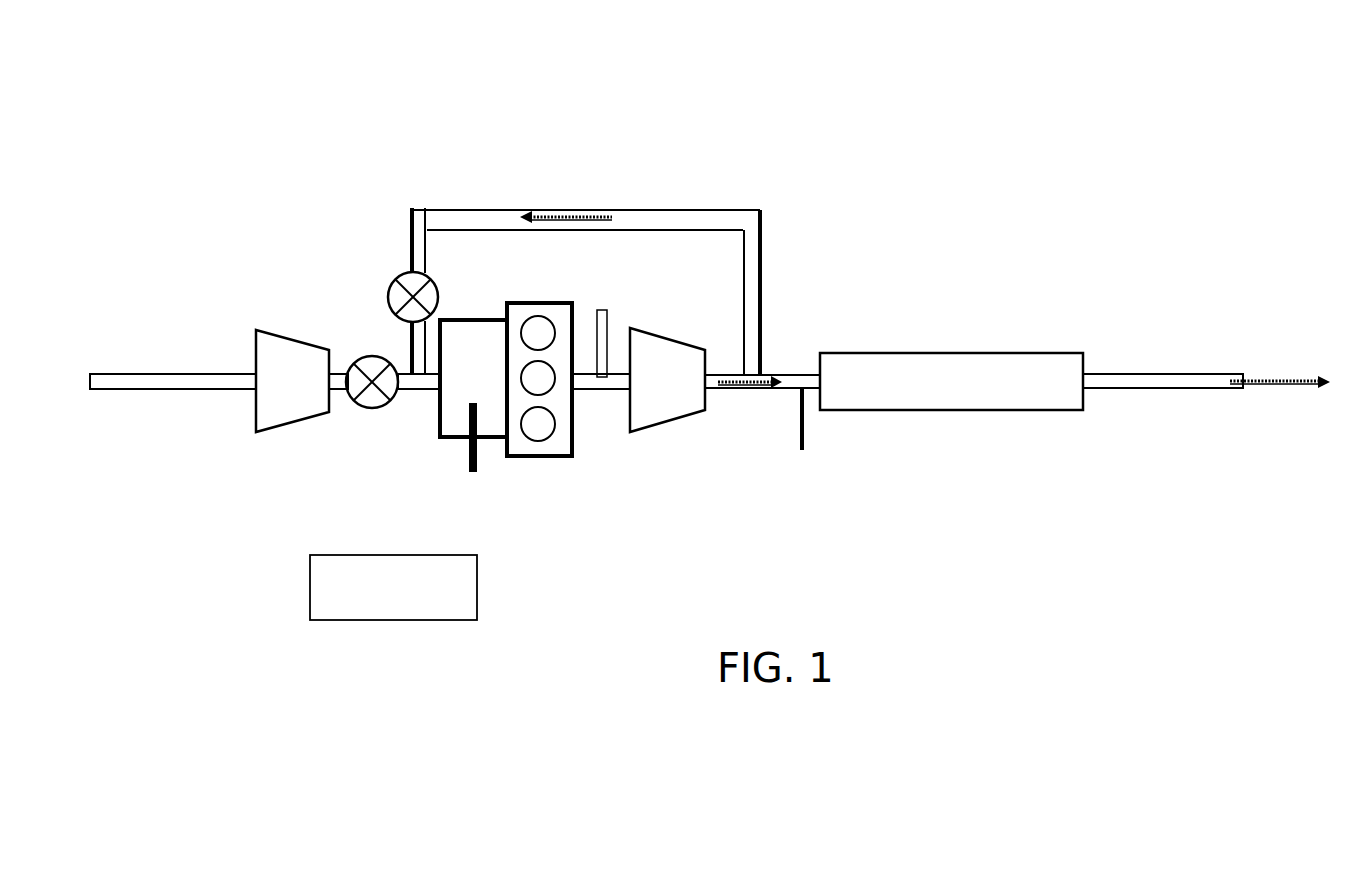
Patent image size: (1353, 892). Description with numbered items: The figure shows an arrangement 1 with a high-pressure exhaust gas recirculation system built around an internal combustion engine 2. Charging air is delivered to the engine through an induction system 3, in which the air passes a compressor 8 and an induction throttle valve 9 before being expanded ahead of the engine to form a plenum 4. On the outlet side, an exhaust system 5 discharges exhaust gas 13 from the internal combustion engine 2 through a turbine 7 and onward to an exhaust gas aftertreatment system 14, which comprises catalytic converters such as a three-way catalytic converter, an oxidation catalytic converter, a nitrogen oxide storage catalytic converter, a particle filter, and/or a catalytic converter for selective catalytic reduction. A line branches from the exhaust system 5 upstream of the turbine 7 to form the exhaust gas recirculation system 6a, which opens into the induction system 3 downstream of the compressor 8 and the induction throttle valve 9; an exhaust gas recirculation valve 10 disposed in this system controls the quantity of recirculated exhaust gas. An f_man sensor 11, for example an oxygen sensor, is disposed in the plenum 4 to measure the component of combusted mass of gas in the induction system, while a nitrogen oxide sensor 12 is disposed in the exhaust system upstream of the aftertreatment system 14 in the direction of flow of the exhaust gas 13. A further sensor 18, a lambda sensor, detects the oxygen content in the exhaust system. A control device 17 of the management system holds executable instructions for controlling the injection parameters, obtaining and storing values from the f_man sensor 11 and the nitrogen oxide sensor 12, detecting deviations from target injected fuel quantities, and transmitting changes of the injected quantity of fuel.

The arrangement 1 is at (1104, 101).
The internal combustion engine 2 is at (555, 443).
The induction system 3 is at (407, 390).
The plenum 4 is at (467, 378).
The exhaust system 5 is at (602, 395).
The exhaust gas recirculation system 6a is at (685, 220).
The turbine 7 is at (670, 395).
The compressor 8 is at (275, 365).
The induction throttle valve 9 is at (363, 368).
The exhaust gas recirculation valve 10 is at (392, 288).
The f_man sensor 11 is at (469, 457).
The nitrogen oxide sensor 12 is at (805, 435).
The exhaust gas 13 is at (810, 330).
The exhaust gas aftertreatment system 14 is at (1035, 362).
The control device 17 is at (393, 587).
The sensor 18 is at (604, 312).